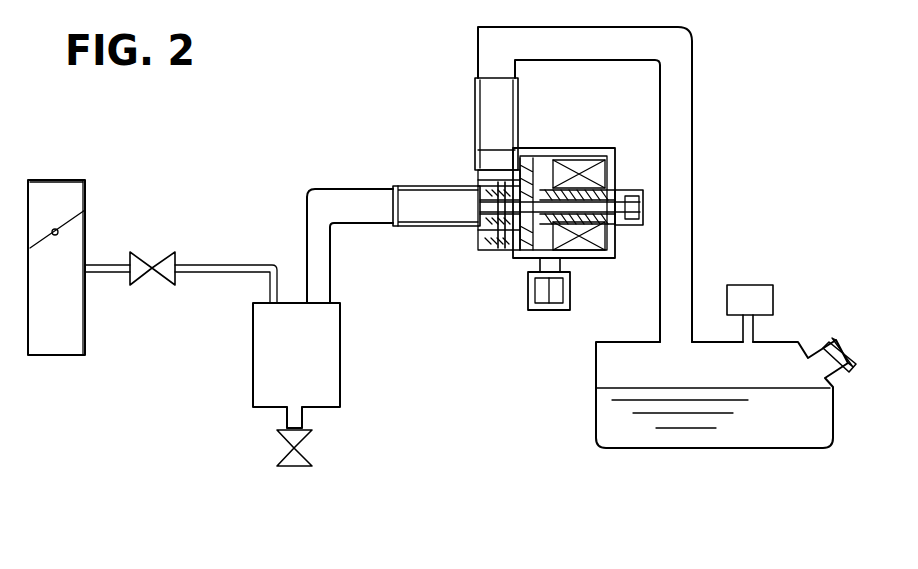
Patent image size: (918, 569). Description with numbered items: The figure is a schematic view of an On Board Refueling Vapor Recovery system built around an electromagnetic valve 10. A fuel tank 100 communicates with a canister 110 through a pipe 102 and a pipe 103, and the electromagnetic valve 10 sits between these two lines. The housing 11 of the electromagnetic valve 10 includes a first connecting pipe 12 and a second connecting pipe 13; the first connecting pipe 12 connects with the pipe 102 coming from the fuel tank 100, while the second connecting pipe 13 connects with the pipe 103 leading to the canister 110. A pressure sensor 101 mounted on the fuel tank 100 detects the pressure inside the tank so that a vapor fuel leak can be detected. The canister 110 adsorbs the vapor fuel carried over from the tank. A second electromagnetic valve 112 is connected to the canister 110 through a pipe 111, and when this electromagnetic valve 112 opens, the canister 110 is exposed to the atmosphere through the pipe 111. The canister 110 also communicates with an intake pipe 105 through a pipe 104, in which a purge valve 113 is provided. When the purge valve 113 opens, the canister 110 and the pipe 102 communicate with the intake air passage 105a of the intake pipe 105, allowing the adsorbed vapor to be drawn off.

The electromagnetic valve 10 is at (527, 310).
The housing 11 is at (477, 250).
The first connecting pipe 12 is at (412, 228).
The second connecting pipe 13 is at (475, 88).
The fuel tank 100 is at (680, 448).
The pressure sensor 101 is at (770, 285).
The pipe 102 is at (330, 188).
The pipe 103 is at (693, 85).
The pipe 104 is at (228, 265).
The intake pipe 105 is at (85, 190).
The intake air passage 105a is at (70, 330).
The canister 110 is at (252, 390).
The pipe 111 is at (307, 415).
The electromagnetic valve 112 is at (305, 467).
The purge valve 113 is at (163, 252).